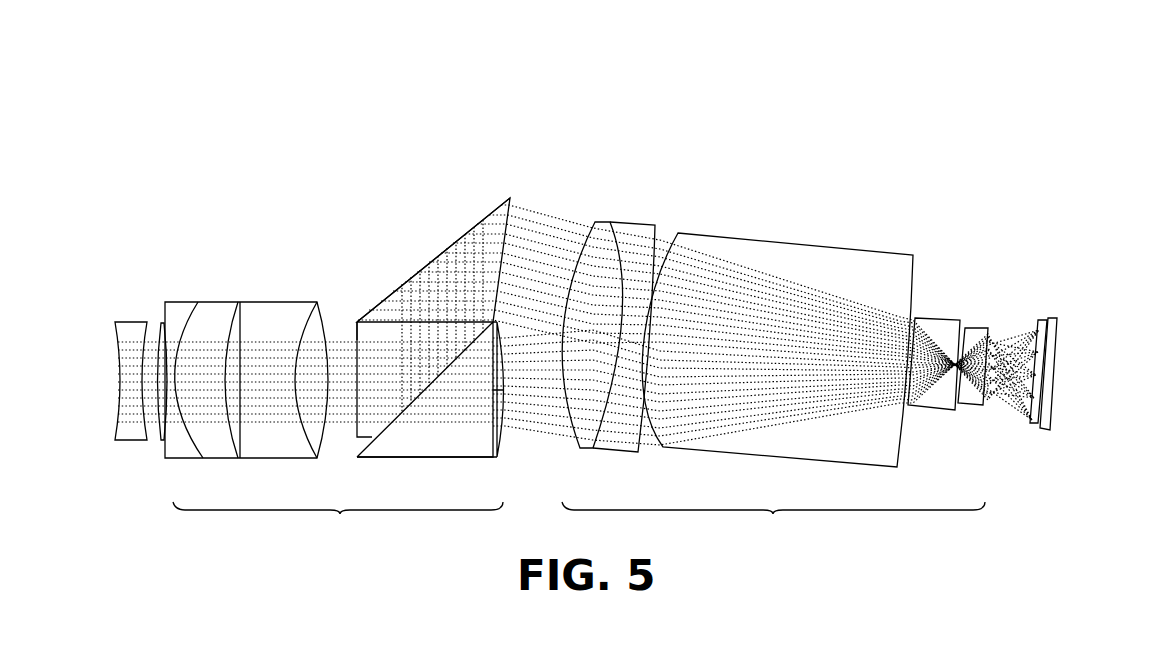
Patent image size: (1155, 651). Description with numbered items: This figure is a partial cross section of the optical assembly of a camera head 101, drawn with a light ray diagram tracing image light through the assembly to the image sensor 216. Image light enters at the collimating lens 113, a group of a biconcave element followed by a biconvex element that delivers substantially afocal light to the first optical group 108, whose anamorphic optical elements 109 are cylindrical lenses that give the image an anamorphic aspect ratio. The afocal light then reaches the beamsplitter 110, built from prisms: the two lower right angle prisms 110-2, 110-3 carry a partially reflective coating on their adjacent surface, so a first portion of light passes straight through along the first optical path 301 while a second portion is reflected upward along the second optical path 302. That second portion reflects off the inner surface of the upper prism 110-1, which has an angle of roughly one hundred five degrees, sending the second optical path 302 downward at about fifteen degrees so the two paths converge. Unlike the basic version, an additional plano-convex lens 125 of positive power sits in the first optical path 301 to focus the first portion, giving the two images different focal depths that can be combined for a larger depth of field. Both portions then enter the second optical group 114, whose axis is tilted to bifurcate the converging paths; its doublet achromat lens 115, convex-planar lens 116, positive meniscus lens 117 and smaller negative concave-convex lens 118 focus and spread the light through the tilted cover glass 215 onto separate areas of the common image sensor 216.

The camera head 101 is at (263, 78).
The first optical group 108 is at (338, 521).
The anamorphic optical elements 109 is at (260, 302).
The beamsplitter 110 is at (407, 325).
The upper prism 110-1 is at (482, 210).
The lower right angle prism 110-2 is at (356, 323).
The lower right angle prism 110-3 is at (420, 460).
The collimating lens 113 is at (166, 318).
The second optical group 114 is at (773, 520).
The doublet achromat lens 115 is at (622, 222).
The convex-planar lens 116 is at (748, 240).
The meniscus lens 117 is at (916, 318).
The concave-convex lens 118 is at (966, 328).
The plano-convex lens 125 is at (505, 445).
The cover glass 215 is at (1039, 320).
The image sensor 216 is at (1055, 337).
The first optical path 301 is at (546, 437).
The second optical path 302 is at (543, 223).